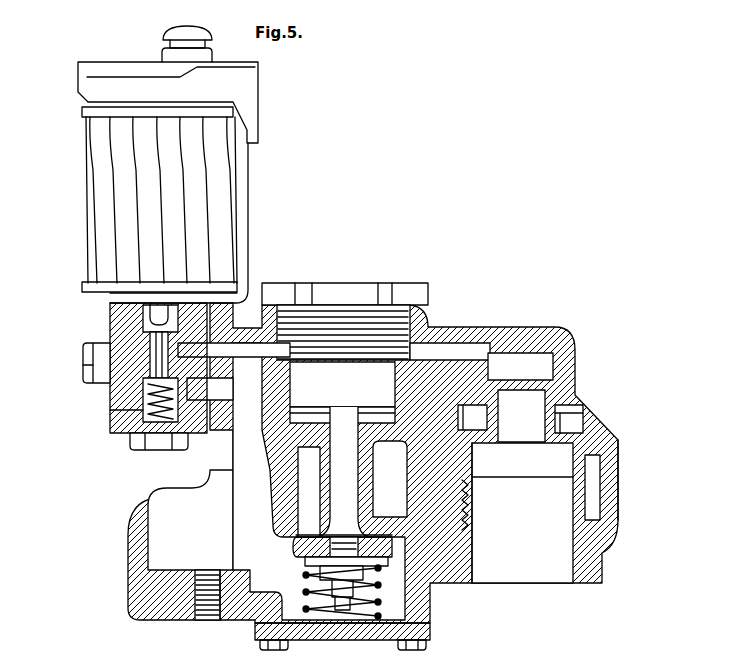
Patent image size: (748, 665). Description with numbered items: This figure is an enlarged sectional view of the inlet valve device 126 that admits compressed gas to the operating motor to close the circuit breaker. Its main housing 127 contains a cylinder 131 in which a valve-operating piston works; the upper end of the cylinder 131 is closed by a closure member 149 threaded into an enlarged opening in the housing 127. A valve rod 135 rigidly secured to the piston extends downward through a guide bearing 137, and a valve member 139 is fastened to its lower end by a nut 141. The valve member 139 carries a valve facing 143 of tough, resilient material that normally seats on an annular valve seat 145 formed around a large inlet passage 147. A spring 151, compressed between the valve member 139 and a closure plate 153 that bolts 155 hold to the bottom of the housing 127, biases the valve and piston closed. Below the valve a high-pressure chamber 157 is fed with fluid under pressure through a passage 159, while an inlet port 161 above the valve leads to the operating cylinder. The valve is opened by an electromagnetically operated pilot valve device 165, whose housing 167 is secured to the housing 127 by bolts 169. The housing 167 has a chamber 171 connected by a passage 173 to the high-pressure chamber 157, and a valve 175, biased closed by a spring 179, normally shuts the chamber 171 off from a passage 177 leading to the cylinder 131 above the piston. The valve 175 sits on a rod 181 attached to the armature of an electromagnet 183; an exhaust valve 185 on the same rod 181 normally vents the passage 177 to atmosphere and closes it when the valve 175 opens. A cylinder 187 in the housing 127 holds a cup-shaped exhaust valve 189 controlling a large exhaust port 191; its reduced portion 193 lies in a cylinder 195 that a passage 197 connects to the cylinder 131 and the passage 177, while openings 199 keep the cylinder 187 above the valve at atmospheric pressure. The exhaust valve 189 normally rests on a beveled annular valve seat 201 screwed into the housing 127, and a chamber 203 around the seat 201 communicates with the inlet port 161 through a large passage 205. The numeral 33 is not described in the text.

The electromagnet 183 is at (78, 216).
The inlet valve device 126 is at (410, 277).
The main housing 127 is at (135, 522).
The inlet port 161 is at (290, 460).
The high-pressure chamber 157 is at (226, 615).
The passage 159 is at (205, 612).
The closure member 149 is at (320, 290).
The passage 177 is at (254, 345).
The passage 197 is at (473, 352).
The cylinder 195 is at (548, 365).
The reduced portion 193 is at (550, 390).
The cylinder 187 is at (578, 420).
The exhaust port 191 is at (537, 573).
The openings 199 is at (479, 445).
The valve seat 201 is at (470, 489).
The passage 205 is at (465, 505).
The exhaust valve 189 is at (592, 463).
The chamber 203 is at (613, 492).
The piston chamber 33 is at (305, 377).
The cylinder 131 is at (292, 413).
The passage 173 is at (290, 410).
The guide bearing 137 is at (320, 475).
The inlet passage 147 is at (364, 512).
The valve rod 135 is at (352, 495).
The valve seat 145 is at (300, 537).
The valve facing 143 is at (296, 546).
The valve member 139 is at (305, 560).
The nut 141 is at (366, 576).
The spring 151 is at (305, 595).
The closure plate 153 is at (350, 640).
The bolts 155 is at (420, 645).
The pilot valve device 165 is at (45, 399).
The exhaust valve 185 is at (122, 320).
The housing 167 is at (145, 348).
The valve 175 is at (120, 395).
The chamber 171 is at (112, 420).
The spring 179 is at (120, 438).
The rod 181 is at (105, 350).
The bolts 169 is at (92, 367).